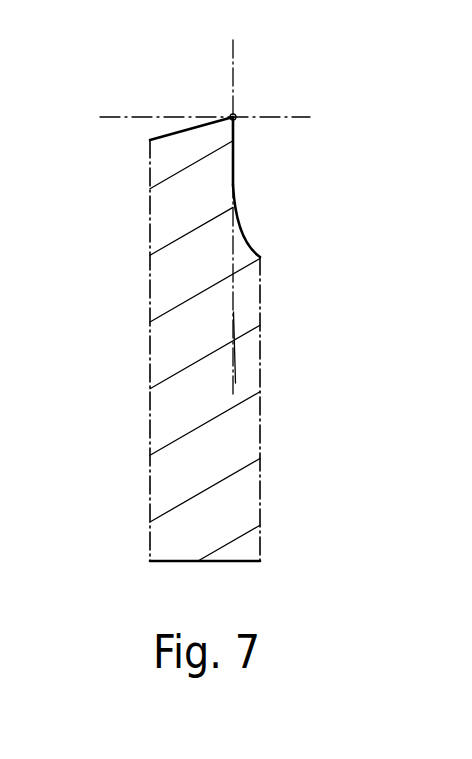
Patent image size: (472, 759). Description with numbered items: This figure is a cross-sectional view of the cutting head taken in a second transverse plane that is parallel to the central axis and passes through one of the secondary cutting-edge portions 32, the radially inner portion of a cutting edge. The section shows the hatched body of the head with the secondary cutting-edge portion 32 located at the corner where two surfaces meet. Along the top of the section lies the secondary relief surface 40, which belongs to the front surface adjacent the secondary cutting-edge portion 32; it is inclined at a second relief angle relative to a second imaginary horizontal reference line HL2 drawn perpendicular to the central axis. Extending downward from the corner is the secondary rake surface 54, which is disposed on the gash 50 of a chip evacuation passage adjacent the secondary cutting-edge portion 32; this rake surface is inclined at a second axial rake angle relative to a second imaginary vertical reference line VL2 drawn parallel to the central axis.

The secondary cutting-edge portion 32 is at (234, 112).
The secondary relief surface 40 is at (200, 126).
The gash 50 is at (237, 185).
The secondary rake surface 54 is at (235, 164).
The second imaginary horizontal reference line HL2 is at (203, 117).
The second imaginary vertical reference line VL2 is at (227, 215).